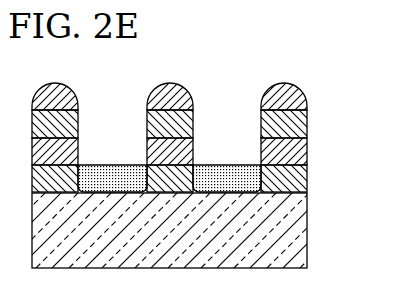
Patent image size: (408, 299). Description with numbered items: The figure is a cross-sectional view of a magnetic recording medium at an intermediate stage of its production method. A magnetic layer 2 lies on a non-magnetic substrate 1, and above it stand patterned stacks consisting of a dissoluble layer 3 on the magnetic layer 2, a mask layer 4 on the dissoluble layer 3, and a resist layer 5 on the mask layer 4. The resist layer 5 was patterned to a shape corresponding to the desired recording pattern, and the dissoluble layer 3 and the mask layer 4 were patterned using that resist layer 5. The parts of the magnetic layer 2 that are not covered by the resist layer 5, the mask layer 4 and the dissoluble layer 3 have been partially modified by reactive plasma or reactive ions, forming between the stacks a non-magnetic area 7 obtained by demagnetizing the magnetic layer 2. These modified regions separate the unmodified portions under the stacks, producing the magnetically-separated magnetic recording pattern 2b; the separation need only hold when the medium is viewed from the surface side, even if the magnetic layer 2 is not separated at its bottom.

The non-magnetic substrate 1 is at (289, 231).
The magnetic layer 2 is at (289, 183).
The magnetic recording pattern 2b is at (172, 167).
The dissoluble layer 3 is at (290, 152).
The mask layer 4 is at (289, 125).
The resist layer 5 is at (294, 95).
The non-magnetic area 7 is at (107, 180).